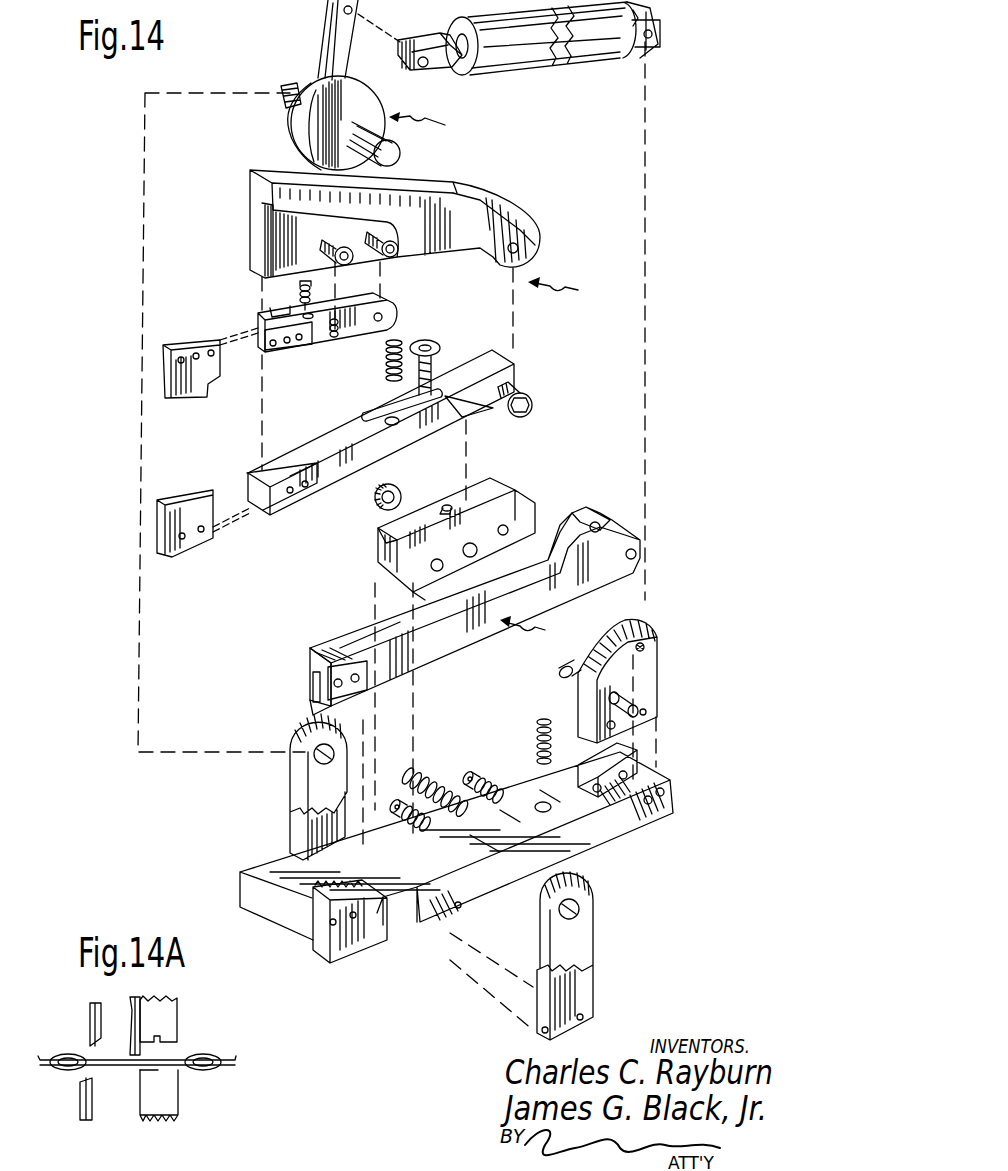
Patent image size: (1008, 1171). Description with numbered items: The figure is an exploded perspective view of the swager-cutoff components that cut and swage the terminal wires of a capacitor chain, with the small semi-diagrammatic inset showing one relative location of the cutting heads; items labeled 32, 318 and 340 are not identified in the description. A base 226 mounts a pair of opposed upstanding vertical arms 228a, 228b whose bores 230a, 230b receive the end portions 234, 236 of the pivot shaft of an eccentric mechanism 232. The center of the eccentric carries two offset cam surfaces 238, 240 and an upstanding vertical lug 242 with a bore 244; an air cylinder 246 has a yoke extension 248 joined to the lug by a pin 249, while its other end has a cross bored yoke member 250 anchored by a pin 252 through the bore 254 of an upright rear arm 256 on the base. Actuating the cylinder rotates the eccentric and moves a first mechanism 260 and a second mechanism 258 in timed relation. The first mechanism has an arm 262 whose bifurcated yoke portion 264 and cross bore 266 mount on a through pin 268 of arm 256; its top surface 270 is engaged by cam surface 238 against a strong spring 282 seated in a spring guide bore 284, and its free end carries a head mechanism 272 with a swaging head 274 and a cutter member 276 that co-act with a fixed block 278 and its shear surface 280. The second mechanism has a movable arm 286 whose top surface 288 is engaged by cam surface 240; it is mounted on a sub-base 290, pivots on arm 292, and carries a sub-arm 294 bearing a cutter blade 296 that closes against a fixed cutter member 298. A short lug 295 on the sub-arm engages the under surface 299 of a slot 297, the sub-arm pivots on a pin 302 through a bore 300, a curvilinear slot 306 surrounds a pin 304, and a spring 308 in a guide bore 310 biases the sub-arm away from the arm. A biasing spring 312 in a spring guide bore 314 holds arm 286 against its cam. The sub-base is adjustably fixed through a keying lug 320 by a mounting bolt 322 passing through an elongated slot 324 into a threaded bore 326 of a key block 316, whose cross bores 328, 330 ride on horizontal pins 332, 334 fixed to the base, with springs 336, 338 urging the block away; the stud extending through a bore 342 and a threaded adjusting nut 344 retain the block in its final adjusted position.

In FIG. 14A, the wire web 32 is at (212, 1057).
In FIG. 14, the base 226 is at (582, 846).
In FIG. 14, the upstanding vertical arm 228a is at (583, 986).
In FIG. 14, the upstanding vertical arm 228b is at (315, 783).
In FIG. 14, the bore 230a is at (578, 909).
In FIG. 14, the bore 230b is at (314, 760).
In FIG. 14, the eccentric mechanism 232 is at (434, 127).
In FIG. 14, the end portion 234 is at (401, 154).
In FIG. 14, the end portion 236 is at (283, 88).
In FIG. 14, the cam surface 238 is at (310, 122).
In FIG. 14, the cam surface 240 is at (290, 115).
In FIG. 14, the upstanding vertical lug 242 is at (340, 38).
In FIG. 14, the bore 244 is at (335, 14).
In FIG. 14, the air cylinder 246 is at (506, 72).
In FIG. 14, the yoke extension 248 is at (422, 34).
In FIG. 14, the pin 249 is at (424, 66).
In FIG. 14, the cross bored yoke member 250 is at (650, 26).
In FIG. 14, the pin 252 is at (656, 37).
In FIG. 14, the bore 254 is at (645, 647).
In FIG. 14, the arm 256 is at (645, 683).
In FIG. 14, the second mechanism 258 is at (570, 292).
In FIG. 14, the first mechanism 260 is at (539, 631).
In FIG. 14, the arm 262 is at (437, 648).
In FIG. 14, the bifurcated end yoke portion 264 is at (590, 514).
In FIG. 14, the cross bore 266 is at (636, 554).
In FIG. 14, the through pin 268 is at (608, 706).
In FIG. 14, the top surface 270 is at (364, 630).
In FIG. 14, the head mechanism 272 is at (305, 663).
In FIG. 14, the swaging head 274 is at (320, 702).
In FIG. 14A, the swaging head 274 is at (168, 1017).
In FIG. 14, the cutter member 276 is at (313, 688).
In FIG. 14A, the cutter member 276 is at (137, 998).
In FIG. 14, the fixed block 278 is at (318, 922).
In FIG. 14A, the fixed block 278 is at (170, 1100).
In FIG. 14, the shear surface 280 is at (282, 876).
In FIG. 14A, the shear surface 280 is at (140, 1070).
In FIG. 14, the strong spring 282 is at (537, 726).
In FIG. 14, the spring guide bore 284 is at (536, 811).
In FIG. 14, the movable arm 286 is at (482, 212).
In FIG. 14, the top surface 288 is at (278, 180).
In FIG. 14, the sub-base 290 is at (480, 418).
In FIG. 14, the arm 292 is at (534, 405).
In FIG. 14, the movable sub-arm 294 is at (326, 350).
In FIG. 14, the short upstanding lug 295 is at (276, 312).
In FIG. 14, the cutter blade 296 is at (208, 388).
In FIG. 14A, the cutter blade 296 is at (90, 1013).
In FIG. 14, the slot 297 is at (290, 235).
In FIG. 14, the fixed cutter member 298 is at (206, 505).
In FIG. 14A, the fixed cutter member 298 is at (82, 1100).
In FIG. 14, the under surface 299 is at (262, 215).
In FIG. 14, the bore 300 is at (385, 315).
In FIG. 14, the pin 302 is at (382, 234).
In FIG. 14, the pin 304 is at (336, 243).
In FIG. 14, the elongated curvilinear slot 306 is at (336, 338).
In FIG. 14, the spring 308 is at (298, 290).
In FIG. 14, the spring guide bore 310 is at (312, 314).
In FIG. 14, the biasing spring 312 is at (398, 340).
In FIG. 14, the spring guide bore 314 is at (388, 420).
In FIG. 14, the key block 316 is at (512, 514).
In FIG. 14, the guide rail 318 is at (386, 543).
In FIG. 14, the keying lug 320 is at (462, 441).
In FIG. 14, the mounting bolt 322 is at (434, 346).
In FIG. 14, the elongated slot 324 is at (398, 402).
In FIG. 14, the threaded bore 326 is at (450, 505).
In FIG. 14, the horizontal cross bore 328 is at (432, 565).
In FIG. 14, the horizontal cross bore 330 is at (508, 528).
In FIG. 14, the horizontal pin 332 is at (400, 825).
In FIG. 14, the horizontal pin 334 is at (478, 777).
In FIG. 14, the spring 336 is at (414, 828).
In FIG. 14, the spring 338 is at (497, 777).
In FIG. 14, the spring 340 is at (412, 780).
In FIG. 14, the bore 342 is at (428, 597).
In FIG. 14, the threaded adjusting nut 344 is at (375, 503).